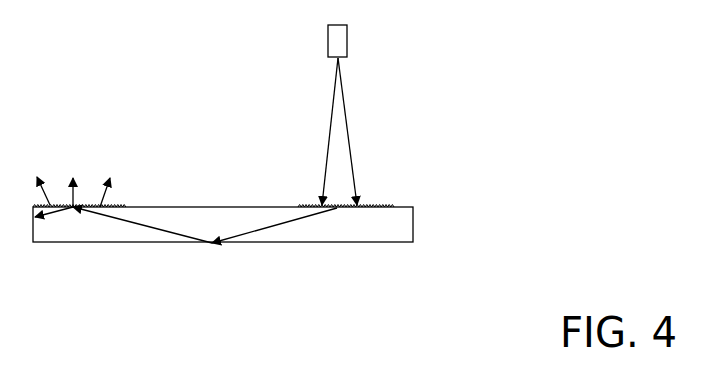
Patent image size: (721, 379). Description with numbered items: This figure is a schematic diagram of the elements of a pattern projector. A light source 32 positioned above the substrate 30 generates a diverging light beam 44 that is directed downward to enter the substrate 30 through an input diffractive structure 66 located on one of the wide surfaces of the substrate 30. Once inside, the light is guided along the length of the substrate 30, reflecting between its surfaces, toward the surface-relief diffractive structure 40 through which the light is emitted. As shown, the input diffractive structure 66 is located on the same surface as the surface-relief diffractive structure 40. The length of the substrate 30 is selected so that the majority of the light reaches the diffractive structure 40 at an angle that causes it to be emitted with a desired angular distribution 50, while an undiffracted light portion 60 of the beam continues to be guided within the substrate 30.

The substrate 30 is at (200, 207).
The light source 32 is at (347, 38).
The surface-relief diffractive structure 40 is at (120, 200).
The diverging light beam 44 is at (348, 130).
The angular distribution 50 is at (66, 178).
The undiffracted light portion 60 is at (44, 214).
The input diffractive structure 66 is at (353, 209).